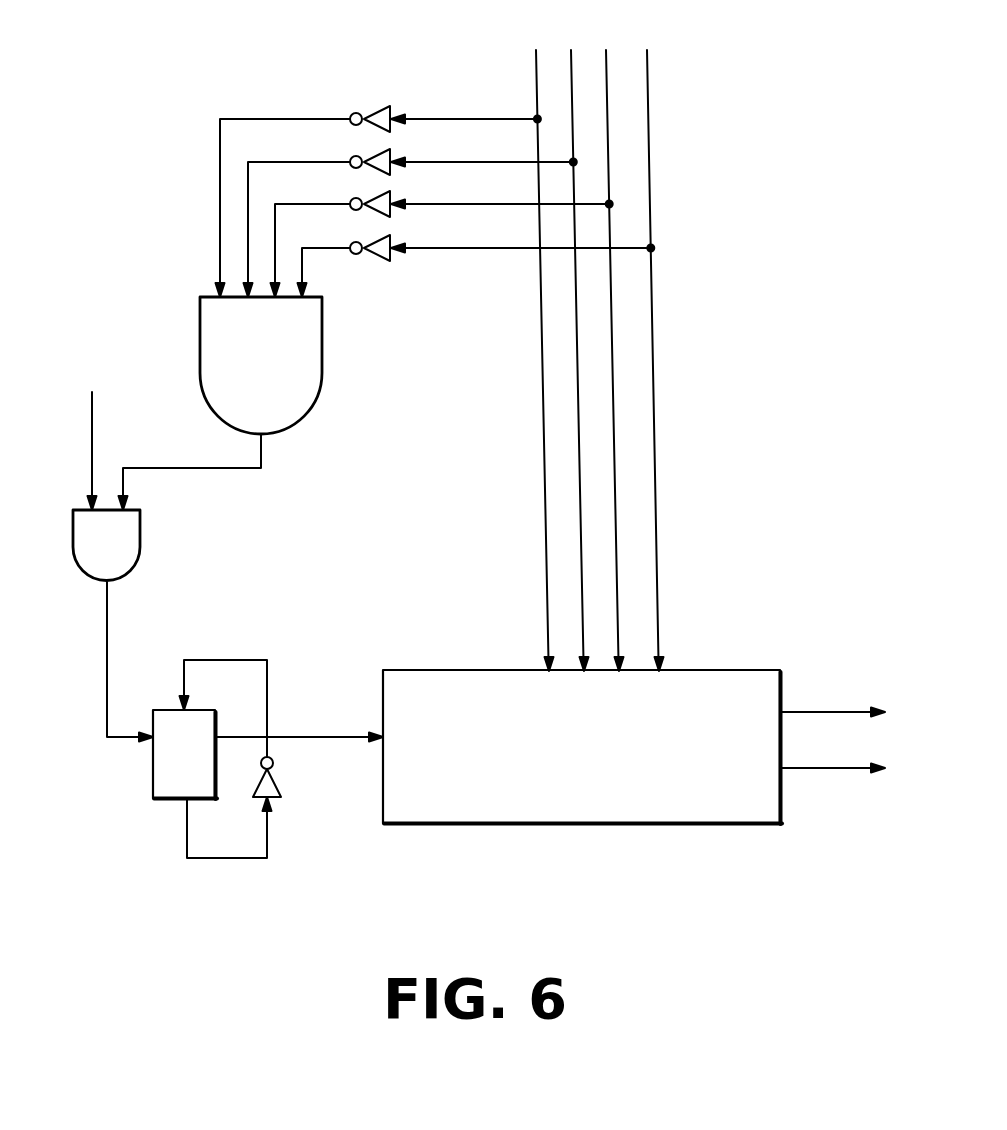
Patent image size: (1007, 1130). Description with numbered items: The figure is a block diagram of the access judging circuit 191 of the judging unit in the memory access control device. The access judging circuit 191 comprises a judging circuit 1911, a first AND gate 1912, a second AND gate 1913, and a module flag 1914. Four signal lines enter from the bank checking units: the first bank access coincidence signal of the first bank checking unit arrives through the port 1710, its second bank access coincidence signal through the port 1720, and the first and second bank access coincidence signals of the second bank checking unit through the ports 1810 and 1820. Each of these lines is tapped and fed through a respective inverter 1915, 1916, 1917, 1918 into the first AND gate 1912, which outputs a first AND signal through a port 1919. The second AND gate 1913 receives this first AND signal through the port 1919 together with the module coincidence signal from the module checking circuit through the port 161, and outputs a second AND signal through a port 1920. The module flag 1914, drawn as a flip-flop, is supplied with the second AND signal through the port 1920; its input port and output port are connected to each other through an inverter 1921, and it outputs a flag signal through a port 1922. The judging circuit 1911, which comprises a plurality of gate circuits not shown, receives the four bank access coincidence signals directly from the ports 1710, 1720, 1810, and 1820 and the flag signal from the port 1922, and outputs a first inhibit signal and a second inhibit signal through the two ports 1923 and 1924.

The access judging circuit 191 is at (246, 37).
The port 161 is at (91, 424).
The port 1710 is at (537, 100).
The port 1720 is at (573, 70).
The port 1810 is at (608, 80).
The port 1820 is at (650, 131).
The judging circuit 1911 is at (683, 670).
The first AND gate 1912 is at (322, 327).
The second AND gate 1913 is at (140, 535).
The module flag 1914 is at (153, 765).
The inverter 1915 is at (366, 107).
The inverter 1916 is at (390, 151).
The inverter 1917 is at (390, 193).
The inverter 1918 is at (390, 237).
The port 1919 is at (208, 468).
The port 1920 is at (108, 608).
The inverter 1921 is at (280, 782).
The port 1922 is at (284, 736).
The port 1923 is at (800, 711).
The port 1924 is at (802, 768).